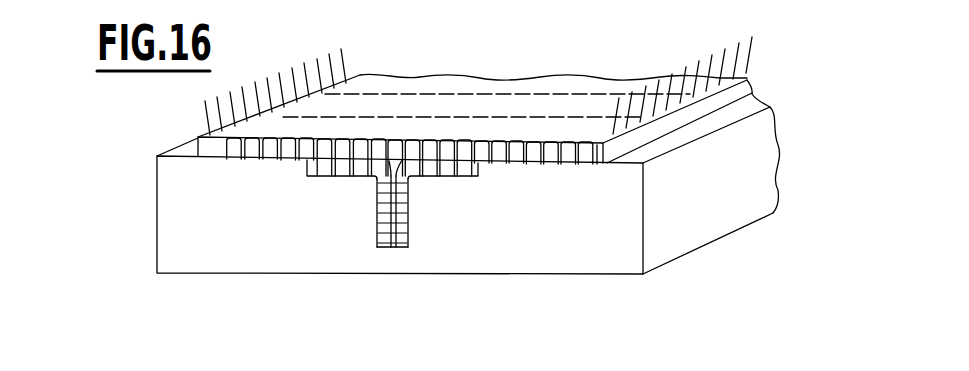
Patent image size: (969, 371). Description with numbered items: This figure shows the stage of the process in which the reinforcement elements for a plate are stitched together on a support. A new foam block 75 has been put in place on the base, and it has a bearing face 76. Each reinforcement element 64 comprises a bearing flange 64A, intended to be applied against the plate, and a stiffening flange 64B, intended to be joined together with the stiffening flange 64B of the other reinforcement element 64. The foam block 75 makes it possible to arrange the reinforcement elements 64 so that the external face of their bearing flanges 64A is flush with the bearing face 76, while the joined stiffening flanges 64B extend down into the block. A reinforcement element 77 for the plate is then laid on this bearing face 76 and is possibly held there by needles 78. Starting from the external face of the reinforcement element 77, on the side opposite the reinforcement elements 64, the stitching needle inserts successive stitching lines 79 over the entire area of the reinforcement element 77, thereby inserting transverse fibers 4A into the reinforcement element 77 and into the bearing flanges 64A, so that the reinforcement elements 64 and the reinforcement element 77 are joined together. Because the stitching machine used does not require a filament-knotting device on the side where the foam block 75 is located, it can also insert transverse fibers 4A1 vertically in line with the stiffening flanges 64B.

The foam block 75 is at (623, 262).
The bearing face 76 is at (748, 106).
The reinforcement element 77 is at (423, 105).
The needles 78 is at (320, 63).
The stitching lines 79 is at (583, 118).
The transverse fibers 4A is at (515, 148).
The transverse fibers 4A1 is at (395, 140).
The reinforcement element 64 is at (395, 249).
The bearing flange 64A is at (323, 168).
The stiffening flange 64B is at (377, 207).